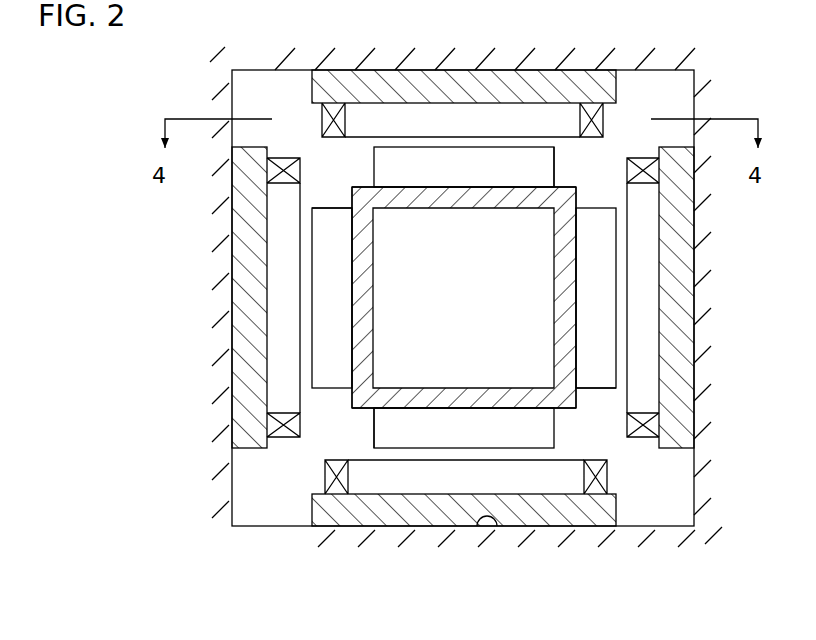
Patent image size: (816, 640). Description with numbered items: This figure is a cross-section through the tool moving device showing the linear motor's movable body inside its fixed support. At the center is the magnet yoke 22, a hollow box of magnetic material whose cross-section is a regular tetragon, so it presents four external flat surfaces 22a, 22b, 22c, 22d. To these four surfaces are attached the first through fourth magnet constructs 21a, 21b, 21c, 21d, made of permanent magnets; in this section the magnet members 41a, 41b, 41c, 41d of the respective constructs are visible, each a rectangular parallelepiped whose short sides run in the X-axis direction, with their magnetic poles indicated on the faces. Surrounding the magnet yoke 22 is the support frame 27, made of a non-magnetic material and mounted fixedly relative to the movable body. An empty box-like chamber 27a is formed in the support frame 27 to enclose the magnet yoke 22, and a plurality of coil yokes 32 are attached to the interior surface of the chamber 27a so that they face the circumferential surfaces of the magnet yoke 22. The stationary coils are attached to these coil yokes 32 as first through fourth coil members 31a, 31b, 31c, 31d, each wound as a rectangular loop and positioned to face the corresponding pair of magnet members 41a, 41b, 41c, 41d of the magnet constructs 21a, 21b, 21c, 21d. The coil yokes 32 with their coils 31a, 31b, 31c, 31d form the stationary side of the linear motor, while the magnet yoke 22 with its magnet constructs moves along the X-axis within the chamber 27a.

The first magnet construct 21a is at (555, 171).
The second magnet construct 21b is at (334, 206).
The third magnet construct 21c is at (374, 427).
The fourth magnet construct 21d is at (601, 390).
The magnet yoke 22 is at (519, 400).
The first external flat surface 22a is at (511, 186).
The second external flat surface 22b is at (352, 254).
The third external flat surface 22c is at (417, 410).
The fourth external flat surface 22d is at (577, 257).
The support frame 27 is at (222, 388).
The empty box-like chamber 27a is at (484, 528).
The first coil member 31a is at (334, 110).
The second coil member 31b is at (275, 427).
The third coil member 31c is at (597, 486).
The fourth coil member 31d is at (650, 425).
The coil yoke 32 is at (497, 88).
The magnet member 41a is at (425, 165).
The magnet member 41b is at (335, 328).
The magnet member 41c is at (446, 440).
The magnet member 41d is at (605, 318).